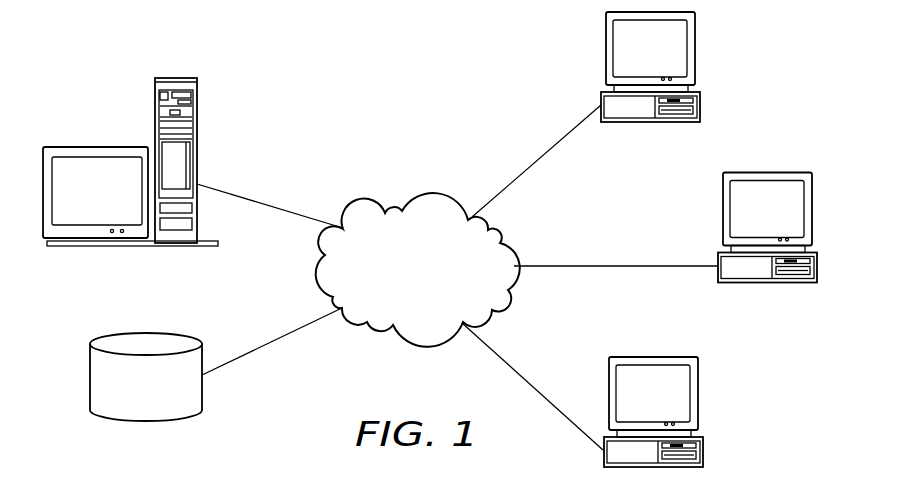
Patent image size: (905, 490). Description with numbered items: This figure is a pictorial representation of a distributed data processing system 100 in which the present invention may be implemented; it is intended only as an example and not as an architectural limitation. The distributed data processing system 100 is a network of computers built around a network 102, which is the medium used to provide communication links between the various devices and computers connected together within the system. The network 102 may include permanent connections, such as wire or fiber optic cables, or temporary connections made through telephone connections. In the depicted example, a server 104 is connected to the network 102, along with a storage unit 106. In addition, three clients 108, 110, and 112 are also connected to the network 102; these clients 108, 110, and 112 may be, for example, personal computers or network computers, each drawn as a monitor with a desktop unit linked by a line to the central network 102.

The distributed data processing system 100 is at (288, 69).
The network 102 is at (434, 284).
The server 104 is at (155, 103).
The storage unit 106 is at (90, 378).
The client 108 is at (695, 58).
The client 110 is at (813, 213).
The client 112 is at (698, 398).